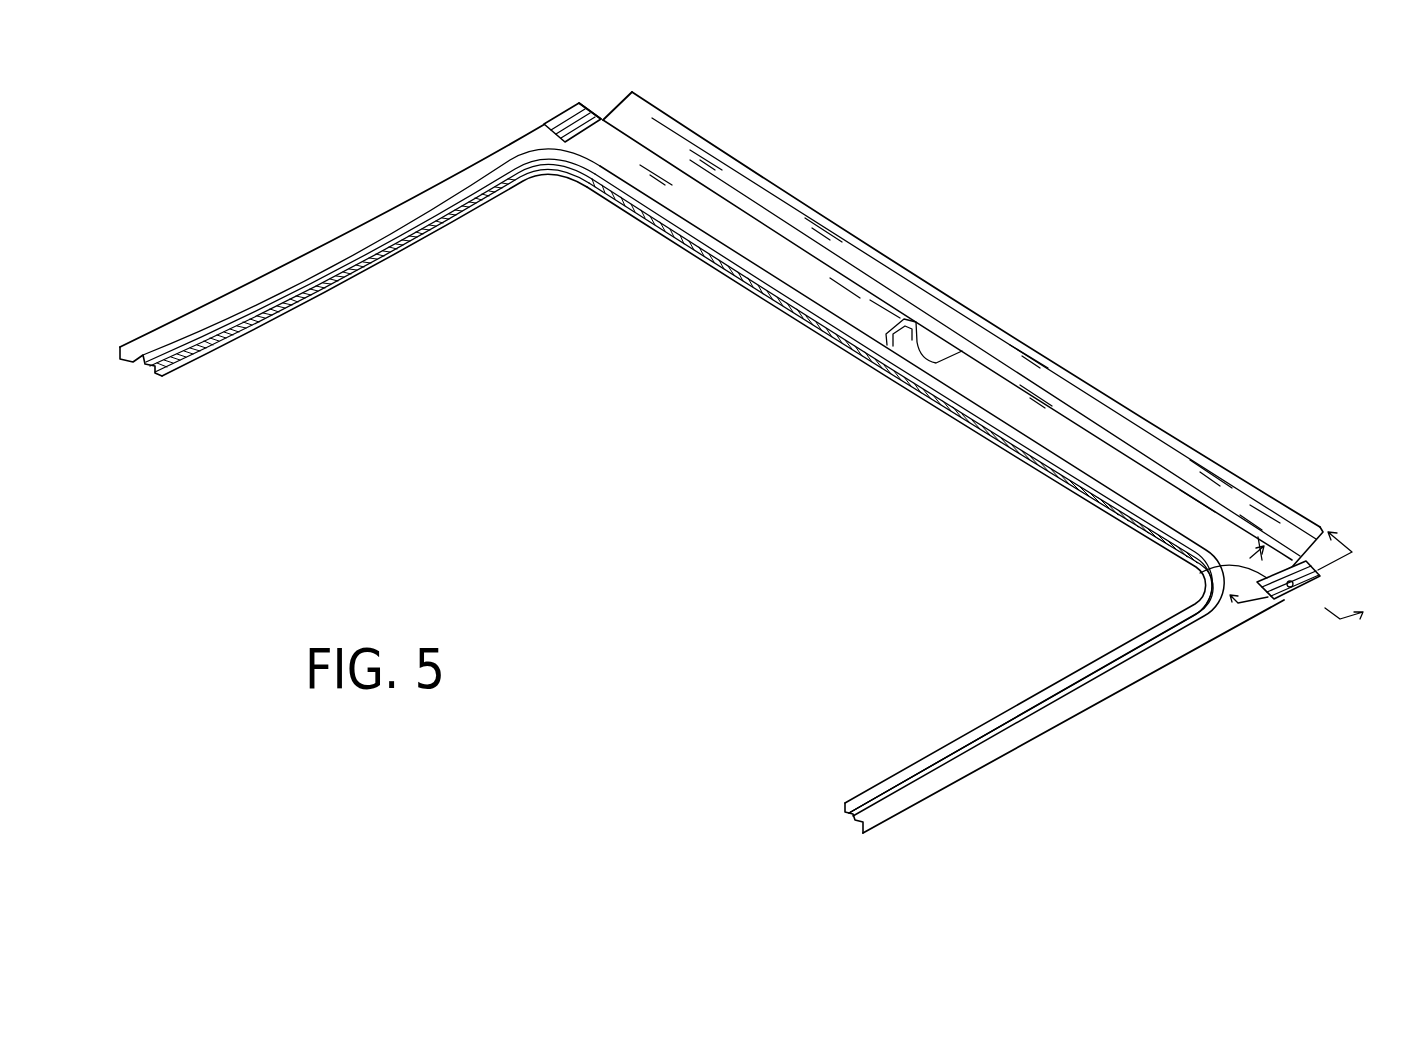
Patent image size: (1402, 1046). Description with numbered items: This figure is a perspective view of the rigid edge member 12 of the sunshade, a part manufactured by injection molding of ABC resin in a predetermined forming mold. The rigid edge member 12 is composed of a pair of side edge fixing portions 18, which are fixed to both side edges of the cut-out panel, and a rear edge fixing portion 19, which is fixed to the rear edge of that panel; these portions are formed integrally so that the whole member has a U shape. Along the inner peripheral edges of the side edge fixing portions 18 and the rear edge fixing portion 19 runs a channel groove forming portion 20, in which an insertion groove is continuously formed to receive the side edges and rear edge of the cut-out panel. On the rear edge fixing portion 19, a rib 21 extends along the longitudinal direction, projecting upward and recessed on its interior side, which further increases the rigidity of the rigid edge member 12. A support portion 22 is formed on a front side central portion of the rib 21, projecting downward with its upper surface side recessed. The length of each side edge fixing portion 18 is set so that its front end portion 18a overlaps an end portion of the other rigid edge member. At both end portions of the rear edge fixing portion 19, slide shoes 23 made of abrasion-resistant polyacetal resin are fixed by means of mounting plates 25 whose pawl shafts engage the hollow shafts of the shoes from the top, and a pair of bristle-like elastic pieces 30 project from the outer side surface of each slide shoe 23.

The rigid edge member 12 is at (470, 157).
The side edge fixing portions 18 is at (341, 233).
The front end portions 18a is at (128, 347).
The rear edge fixing portion 19 is at (848, 297).
The channel groove forming portion 20 is at (796, 322).
The rib 21 is at (1040, 358).
The support portion 22 is at (923, 347).
The slide shoes 23 is at (558, 105).
The mounting plates 25 is at (593, 117).
The bristle-like elastic pieces 30 is at (1316, 583).